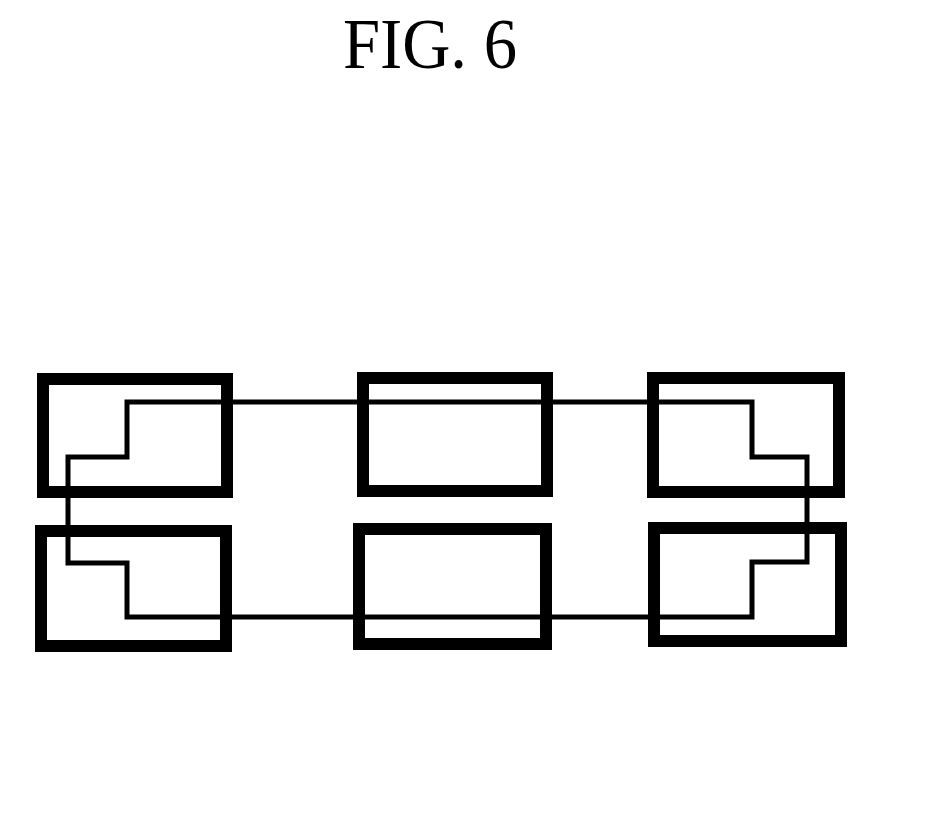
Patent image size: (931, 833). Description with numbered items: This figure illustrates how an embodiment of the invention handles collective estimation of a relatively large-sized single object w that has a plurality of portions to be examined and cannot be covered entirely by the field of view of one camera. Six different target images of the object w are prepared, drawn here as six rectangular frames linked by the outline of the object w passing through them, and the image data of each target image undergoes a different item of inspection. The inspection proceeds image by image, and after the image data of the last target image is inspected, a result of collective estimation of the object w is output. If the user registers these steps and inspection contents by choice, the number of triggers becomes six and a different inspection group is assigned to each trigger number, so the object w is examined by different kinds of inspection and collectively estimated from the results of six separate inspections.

The object W is at (282, 397).